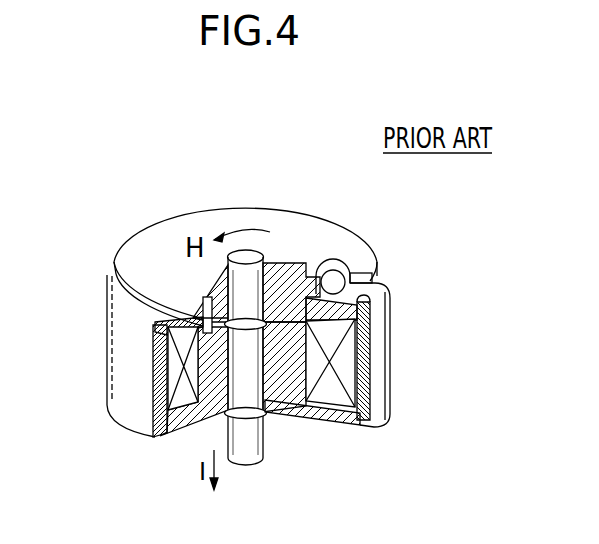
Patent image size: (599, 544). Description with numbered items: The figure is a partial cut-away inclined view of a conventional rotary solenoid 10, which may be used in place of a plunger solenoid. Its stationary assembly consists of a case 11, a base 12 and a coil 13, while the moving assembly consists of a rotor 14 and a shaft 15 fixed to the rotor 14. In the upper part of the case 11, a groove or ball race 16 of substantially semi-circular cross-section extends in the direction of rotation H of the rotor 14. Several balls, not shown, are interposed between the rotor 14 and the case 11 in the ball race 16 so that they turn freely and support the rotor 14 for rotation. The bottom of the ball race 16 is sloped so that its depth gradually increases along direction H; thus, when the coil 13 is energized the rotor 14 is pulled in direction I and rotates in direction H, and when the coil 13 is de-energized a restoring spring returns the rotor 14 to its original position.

The rotary solenoid 10 is at (366, 220).
The case 11 is at (385, 342).
The base 12 is at (342, 420).
The coil 13 is at (175, 365).
The rotor 14 is at (295, 222).
The shaft 15 is at (250, 455).
The groove (ball race) 16 is at (392, 305).